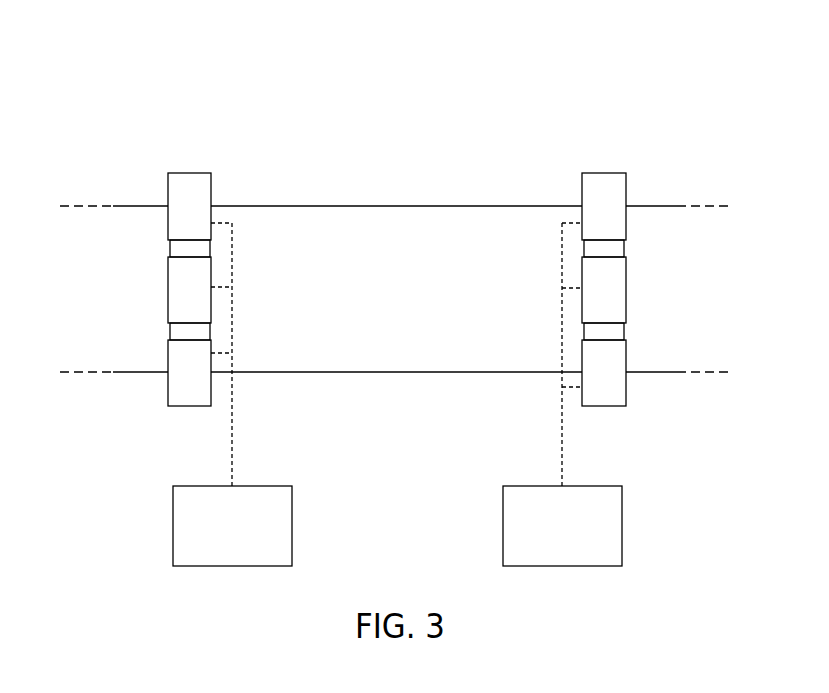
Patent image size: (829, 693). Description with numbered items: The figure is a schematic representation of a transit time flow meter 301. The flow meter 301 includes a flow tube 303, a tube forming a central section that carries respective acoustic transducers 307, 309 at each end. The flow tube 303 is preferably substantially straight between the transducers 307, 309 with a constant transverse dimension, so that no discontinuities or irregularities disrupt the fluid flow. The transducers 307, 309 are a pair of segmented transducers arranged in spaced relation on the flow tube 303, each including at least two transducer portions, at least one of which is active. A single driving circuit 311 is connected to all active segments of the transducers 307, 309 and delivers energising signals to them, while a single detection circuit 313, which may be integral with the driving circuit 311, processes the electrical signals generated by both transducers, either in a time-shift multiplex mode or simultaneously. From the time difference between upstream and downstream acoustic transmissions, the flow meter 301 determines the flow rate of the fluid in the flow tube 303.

The flow meter 301 is at (662, 49).
The flow tube 303 is at (448, 243).
The acoustic transducer 307 is at (190, 260).
The acoustic transducer 309 is at (604, 262).
The driving circuit 311 is at (208, 543).
The detection circuit 313 is at (588, 543).